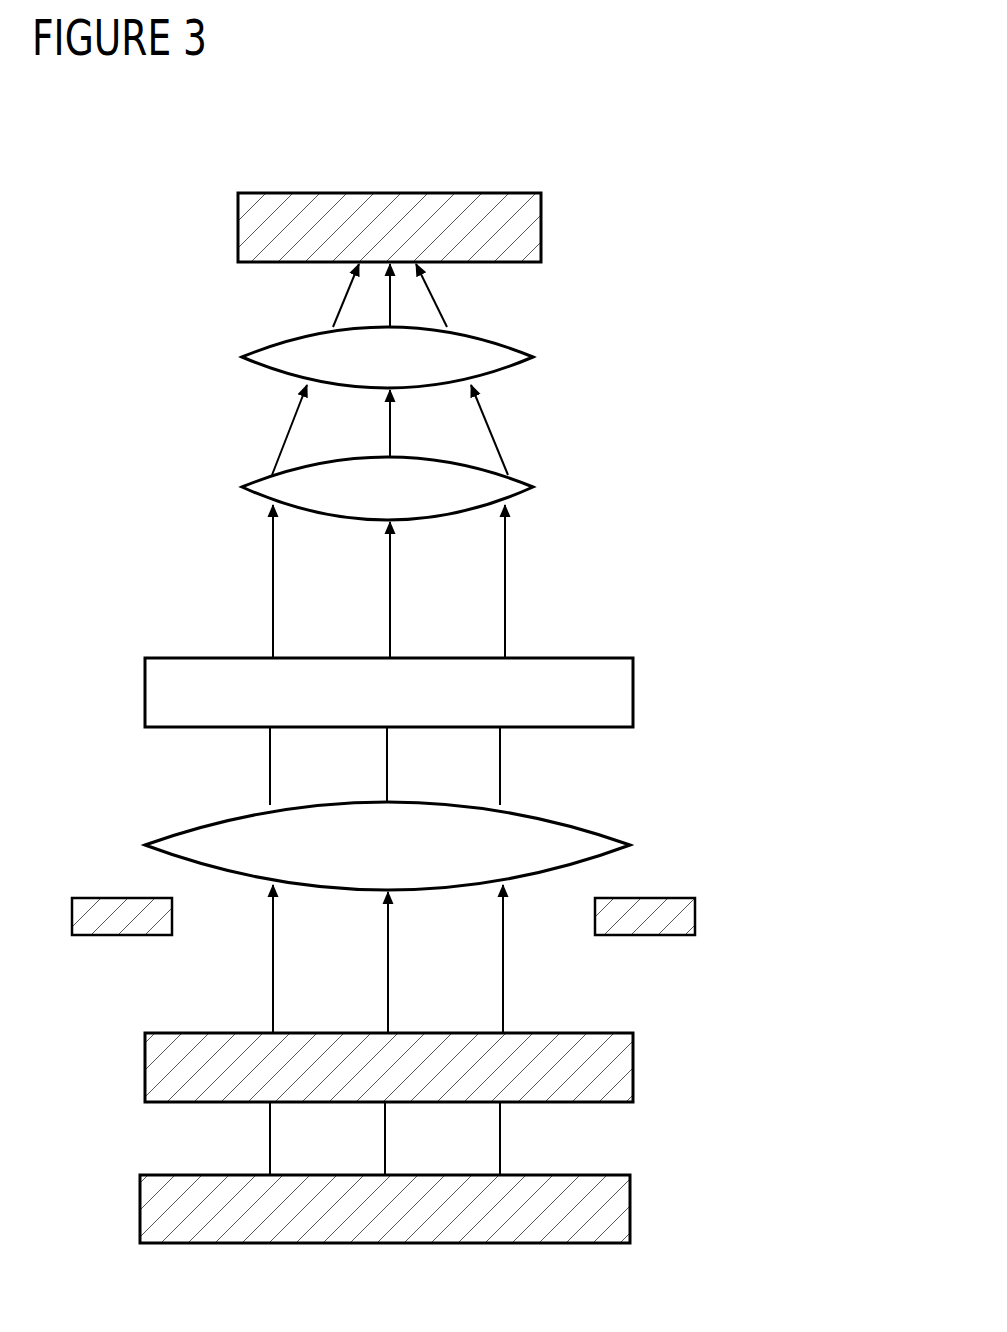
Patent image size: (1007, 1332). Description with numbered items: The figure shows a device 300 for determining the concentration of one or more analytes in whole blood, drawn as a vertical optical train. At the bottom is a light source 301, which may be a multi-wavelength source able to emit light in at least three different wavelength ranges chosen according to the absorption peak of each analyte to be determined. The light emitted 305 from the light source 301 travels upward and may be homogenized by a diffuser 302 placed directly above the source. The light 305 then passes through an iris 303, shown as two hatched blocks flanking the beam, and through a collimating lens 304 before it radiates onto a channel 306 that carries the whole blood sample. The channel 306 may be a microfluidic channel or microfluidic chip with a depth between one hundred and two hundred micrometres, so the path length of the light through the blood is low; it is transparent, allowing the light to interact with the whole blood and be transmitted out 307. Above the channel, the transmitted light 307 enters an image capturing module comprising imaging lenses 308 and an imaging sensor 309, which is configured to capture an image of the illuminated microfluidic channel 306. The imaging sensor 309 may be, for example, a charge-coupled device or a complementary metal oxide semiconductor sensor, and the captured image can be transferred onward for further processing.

The device 300 is at (479, 134).
The light source 301 is at (630, 1207).
The diffuser 302 is at (633, 1065).
The iris 303 is at (695, 915).
The collimating lens 304 is at (630, 845).
The light emitted 305 is at (500, 775).
The channel 306 is at (633, 692).
The transmitted light 307 is at (505, 577).
The imaging lenses 308 is at (533, 357).
The imaging sensor 309 is at (541, 225).